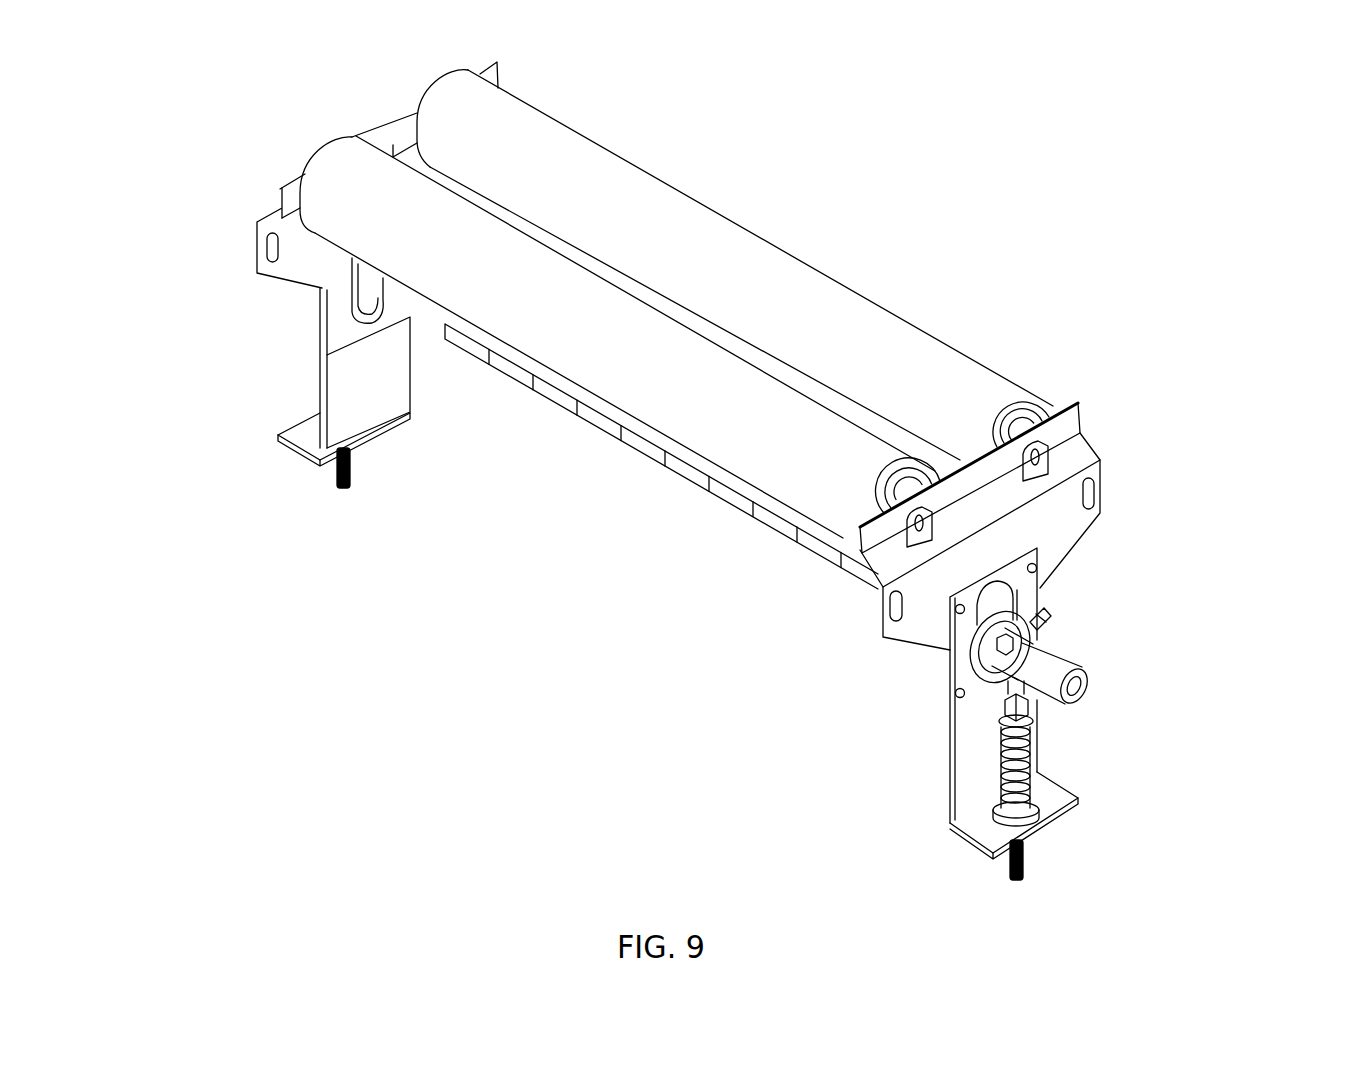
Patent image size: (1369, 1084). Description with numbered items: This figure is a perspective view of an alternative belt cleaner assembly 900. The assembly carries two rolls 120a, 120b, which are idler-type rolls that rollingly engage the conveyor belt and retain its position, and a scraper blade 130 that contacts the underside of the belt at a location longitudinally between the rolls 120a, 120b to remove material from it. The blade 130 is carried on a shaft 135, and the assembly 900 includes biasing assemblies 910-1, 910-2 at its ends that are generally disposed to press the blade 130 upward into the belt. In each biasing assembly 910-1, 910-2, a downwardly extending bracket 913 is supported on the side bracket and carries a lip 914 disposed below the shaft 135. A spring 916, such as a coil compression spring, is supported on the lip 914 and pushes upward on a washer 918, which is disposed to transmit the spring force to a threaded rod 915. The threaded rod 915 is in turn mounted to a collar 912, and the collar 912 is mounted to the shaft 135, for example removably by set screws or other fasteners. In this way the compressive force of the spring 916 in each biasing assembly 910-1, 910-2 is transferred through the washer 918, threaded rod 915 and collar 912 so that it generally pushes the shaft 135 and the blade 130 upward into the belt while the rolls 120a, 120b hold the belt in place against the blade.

The cleaner assembly 900 is at (100, 138).
The biasing assembly 910-1 is at (185, 377).
The biasing assembly 910-2 is at (1186, 877).
The roll 120a is at (620, 375).
The roll 120b is at (657, 190).
The scraper blade 130 is at (733, 479).
The collar 912 is at (1047, 660).
The shaft 135 is at (1058, 664).
The washer 918 is at (1030, 717).
The lip 914 is at (1060, 801).
The bracket 913 is at (960, 732).
The spring 916 is at (997, 770).
The threaded rod 915 is at (1022, 858).